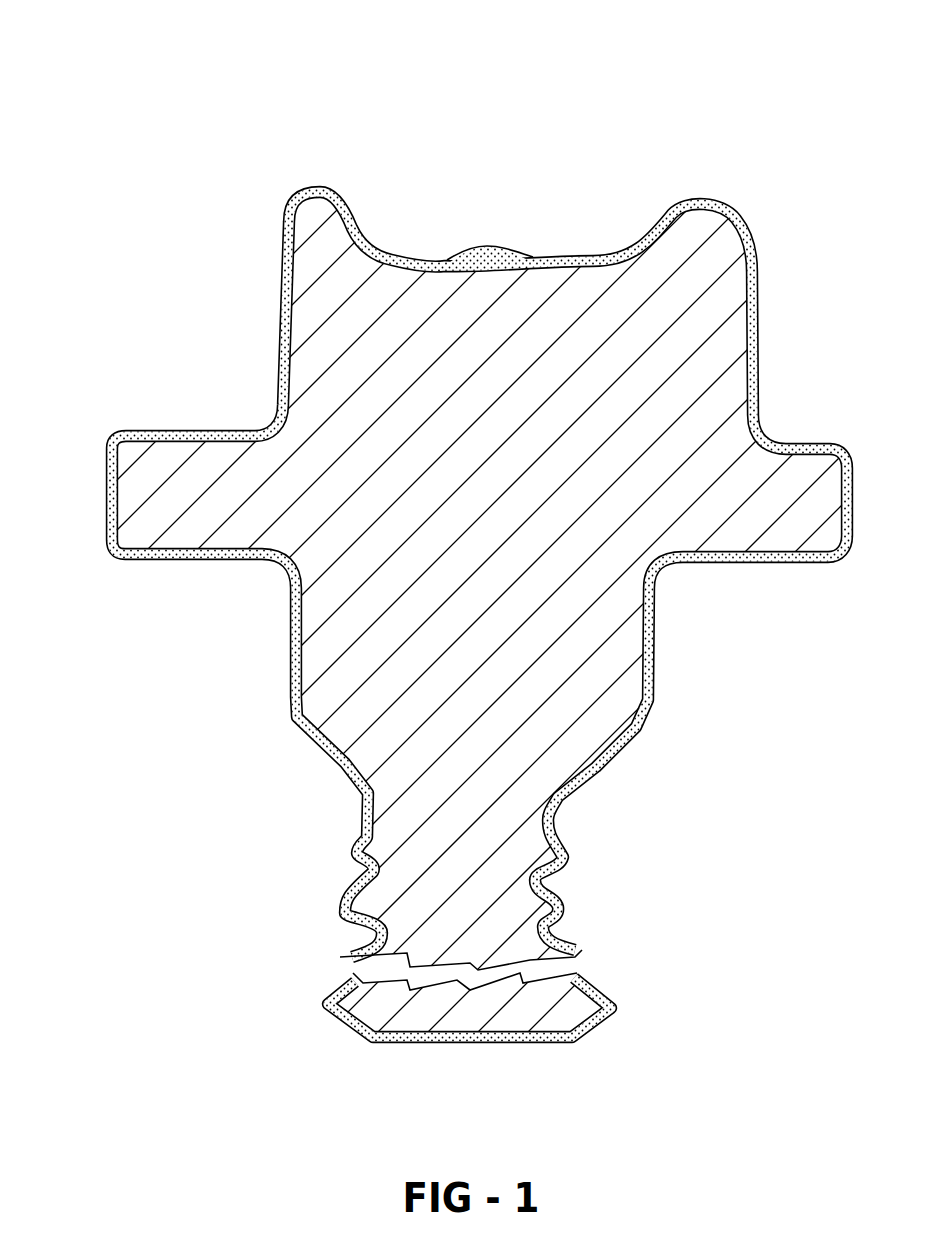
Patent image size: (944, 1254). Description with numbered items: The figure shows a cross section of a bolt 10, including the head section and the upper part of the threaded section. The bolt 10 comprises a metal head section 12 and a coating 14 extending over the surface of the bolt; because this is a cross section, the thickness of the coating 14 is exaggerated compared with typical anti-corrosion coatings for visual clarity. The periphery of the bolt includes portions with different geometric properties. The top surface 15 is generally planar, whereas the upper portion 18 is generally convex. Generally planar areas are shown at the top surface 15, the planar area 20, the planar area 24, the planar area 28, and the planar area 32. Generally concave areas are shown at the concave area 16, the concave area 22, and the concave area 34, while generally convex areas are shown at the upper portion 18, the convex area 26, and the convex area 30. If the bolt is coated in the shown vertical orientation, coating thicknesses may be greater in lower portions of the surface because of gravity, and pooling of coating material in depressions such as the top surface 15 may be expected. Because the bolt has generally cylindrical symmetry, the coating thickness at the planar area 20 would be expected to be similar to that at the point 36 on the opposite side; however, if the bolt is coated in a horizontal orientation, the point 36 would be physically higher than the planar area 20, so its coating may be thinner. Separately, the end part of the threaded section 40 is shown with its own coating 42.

The bolt 10 is at (675, 153).
The metal head section 12 is at (461, 480).
The coating 14 is at (837, 448).
The top surface 15 is at (487, 248).
The concave area 16 is at (355, 221).
The upper portion 18 is at (318, 186).
The planar area 20 is at (280, 303).
The concave area 22 is at (270, 428).
The planar area 24 is at (201, 430).
The convex area 26 is at (125, 430).
The planar area 28 is at (107, 490).
The convex area 30 is at (117, 556).
The planar area 32 is at (203, 562).
The concave area 34 is at (295, 576).
The point 36 is at (760, 306).
The end part of the threaded section 40 is at (570, 1007).
The coating 42 is at (476, 1048).